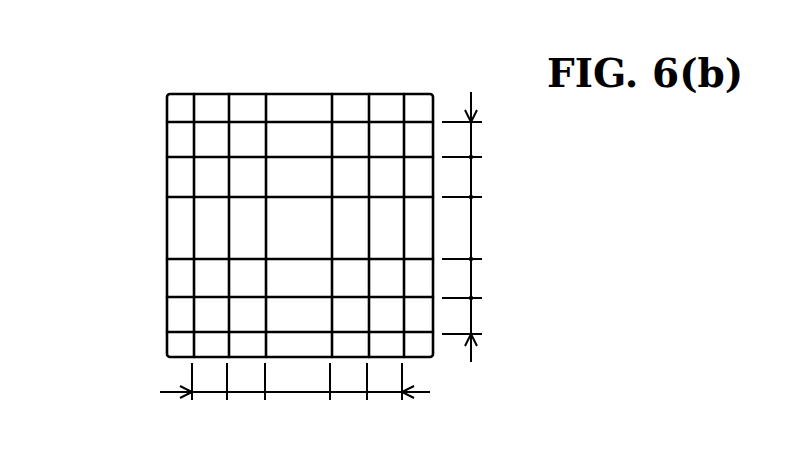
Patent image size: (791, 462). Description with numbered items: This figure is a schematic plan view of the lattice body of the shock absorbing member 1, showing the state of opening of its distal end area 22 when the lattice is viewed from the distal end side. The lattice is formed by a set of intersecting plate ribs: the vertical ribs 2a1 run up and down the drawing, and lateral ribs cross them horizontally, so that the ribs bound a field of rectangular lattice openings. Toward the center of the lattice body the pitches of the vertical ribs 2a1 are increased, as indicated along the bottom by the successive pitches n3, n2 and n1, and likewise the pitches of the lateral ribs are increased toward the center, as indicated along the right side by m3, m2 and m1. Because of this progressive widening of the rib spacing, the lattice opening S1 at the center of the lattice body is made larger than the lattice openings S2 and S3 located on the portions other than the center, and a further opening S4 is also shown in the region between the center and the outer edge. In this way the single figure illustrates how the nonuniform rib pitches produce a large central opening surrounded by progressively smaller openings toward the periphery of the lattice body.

The pixel array / display region 1 is at (126, 130).
The distal end area 22 is at (249, 120).
The lattice opening S2 is at (300, 170).
The lattice opening S3 is at (355, 170).
The pixel area S4 is at (208, 242).
The lattice opening S1 is at (293, 240).
The vertical ribs 2a1 is at (434, 348).
The pitch of lateral ribs m1 is at (479, 228).
The pitch of lateral ribs m2 is at (479, 227).
The pitch of lateral ribs m3 is at (479, 228).
The pitch of vertical ribs n1 is at (297, 396).
The pitch of vertical ribs n2 is at (297, 396).
The pitch of vertical ribs n3 is at (297, 396).